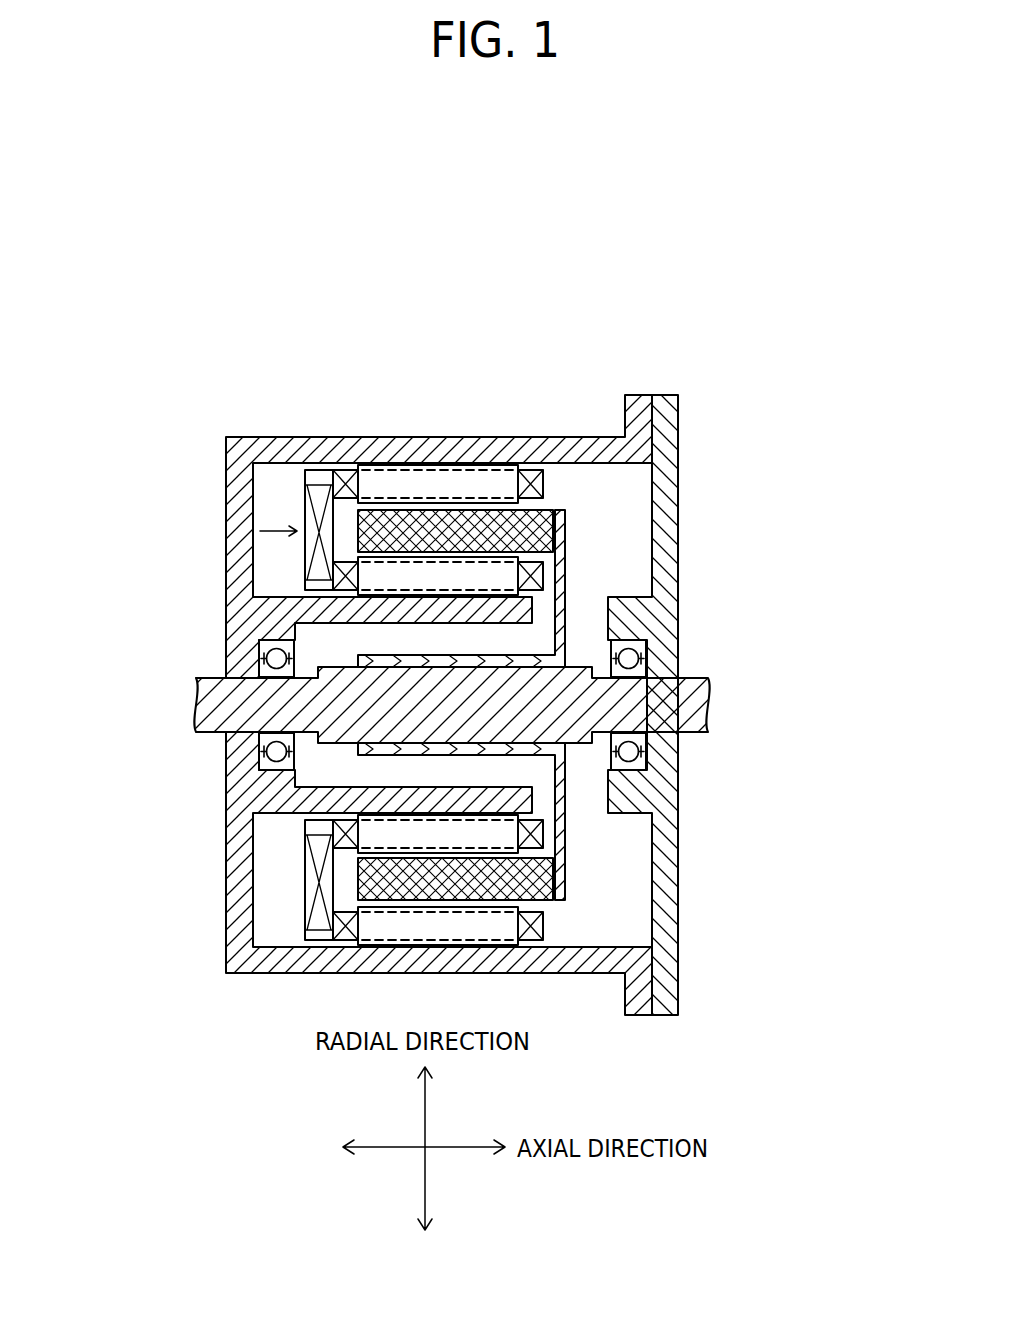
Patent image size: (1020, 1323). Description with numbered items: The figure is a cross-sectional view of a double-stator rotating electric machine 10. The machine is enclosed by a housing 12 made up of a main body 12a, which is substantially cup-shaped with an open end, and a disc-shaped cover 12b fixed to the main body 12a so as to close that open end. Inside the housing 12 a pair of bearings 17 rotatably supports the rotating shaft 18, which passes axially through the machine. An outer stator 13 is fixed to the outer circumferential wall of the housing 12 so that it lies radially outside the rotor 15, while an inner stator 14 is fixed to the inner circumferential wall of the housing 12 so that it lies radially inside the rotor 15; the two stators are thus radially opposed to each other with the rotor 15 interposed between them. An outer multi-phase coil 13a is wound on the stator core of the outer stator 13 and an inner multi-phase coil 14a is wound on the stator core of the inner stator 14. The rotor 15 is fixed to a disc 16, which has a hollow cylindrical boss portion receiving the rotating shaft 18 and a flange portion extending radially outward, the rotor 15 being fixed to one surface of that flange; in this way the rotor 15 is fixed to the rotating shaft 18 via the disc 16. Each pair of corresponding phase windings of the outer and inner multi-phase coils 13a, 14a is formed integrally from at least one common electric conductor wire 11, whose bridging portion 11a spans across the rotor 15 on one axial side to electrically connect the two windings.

The double-stator rotating electric machine 10 is at (263, 400).
The electric conductor wire 11 is at (115, 452).
The bridging portion 11a is at (317, 563).
The housing 12 is at (492, 657).
The main body 12a is at (327, 457).
The cover 12b is at (677, 433).
The outer stator 13 is at (415, 482).
The outer multi-phase coil 13a is at (337, 485).
The inner stator 14 is at (450, 570).
The inner multi-phase coil 14a is at (337, 578).
The rotor 15 is at (543, 512).
The disc 16 is at (558, 570).
The bearings 17 is at (629, 654).
The rotating shaft 18 is at (686, 692).